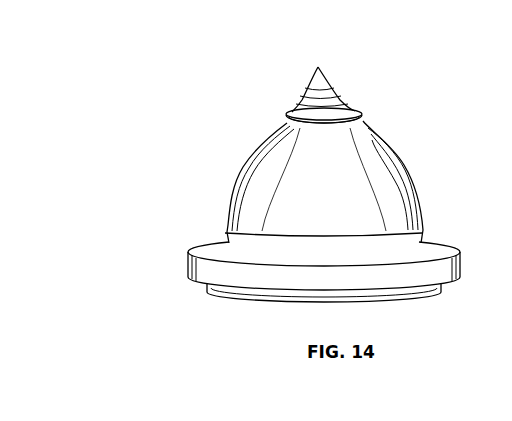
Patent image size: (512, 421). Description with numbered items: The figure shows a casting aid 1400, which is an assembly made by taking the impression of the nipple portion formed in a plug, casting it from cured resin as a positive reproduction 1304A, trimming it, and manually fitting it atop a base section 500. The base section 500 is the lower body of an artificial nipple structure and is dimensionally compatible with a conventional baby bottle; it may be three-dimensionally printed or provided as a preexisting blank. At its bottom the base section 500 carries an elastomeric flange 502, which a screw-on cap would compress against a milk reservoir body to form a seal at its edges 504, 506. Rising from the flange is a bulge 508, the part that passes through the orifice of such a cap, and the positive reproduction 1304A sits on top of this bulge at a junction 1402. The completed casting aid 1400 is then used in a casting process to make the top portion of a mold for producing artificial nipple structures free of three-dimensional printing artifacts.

The casting aid 1400 is at (421, 117).
The base section 500 is at (170, 119).
The elastomeric flange 502 is at (443, 250).
The edge 504 is at (324, 249).
The edge 506 is at (443, 290).
The bulge 508 is at (325, 176).
The ring 1402 is at (284, 119).
The positive reproduction 1304A is at (315, 67).